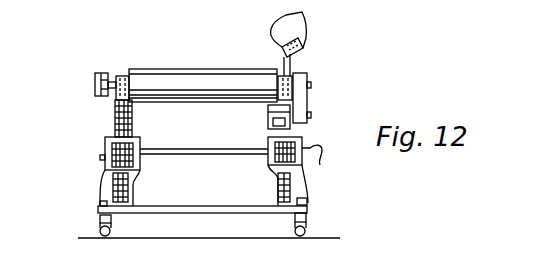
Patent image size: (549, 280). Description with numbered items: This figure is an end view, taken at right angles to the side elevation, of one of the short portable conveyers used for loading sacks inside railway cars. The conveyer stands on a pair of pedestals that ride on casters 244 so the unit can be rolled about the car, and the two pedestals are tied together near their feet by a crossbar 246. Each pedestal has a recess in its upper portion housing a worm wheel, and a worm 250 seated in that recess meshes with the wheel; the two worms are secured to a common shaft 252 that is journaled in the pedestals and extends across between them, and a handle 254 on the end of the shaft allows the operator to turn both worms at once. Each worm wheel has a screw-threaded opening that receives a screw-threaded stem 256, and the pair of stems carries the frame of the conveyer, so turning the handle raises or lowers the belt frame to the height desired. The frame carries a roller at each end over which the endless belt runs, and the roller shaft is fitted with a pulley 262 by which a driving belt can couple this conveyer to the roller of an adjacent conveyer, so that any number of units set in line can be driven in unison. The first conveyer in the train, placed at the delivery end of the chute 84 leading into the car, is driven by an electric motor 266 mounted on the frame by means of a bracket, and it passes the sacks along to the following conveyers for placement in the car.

The chute 84 is at (297, 29).
The casters 244 is at (111, 233).
The crossbar 246 is at (194, 206).
The worm 250 is at (105, 158).
The shaft 252 is at (185, 149).
The handle 254 is at (327, 167).
The screw-threaded stem 256 is at (115, 119).
The pulleys 262 is at (94, 90).
The electric motor 266 is at (268, 117).